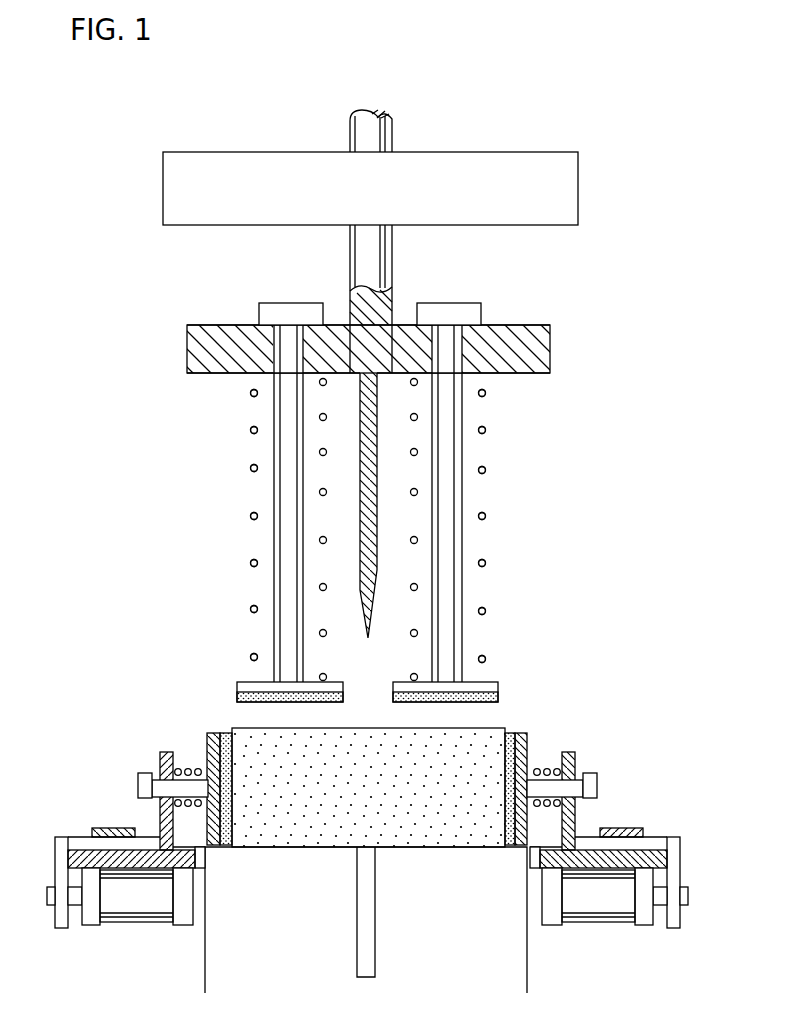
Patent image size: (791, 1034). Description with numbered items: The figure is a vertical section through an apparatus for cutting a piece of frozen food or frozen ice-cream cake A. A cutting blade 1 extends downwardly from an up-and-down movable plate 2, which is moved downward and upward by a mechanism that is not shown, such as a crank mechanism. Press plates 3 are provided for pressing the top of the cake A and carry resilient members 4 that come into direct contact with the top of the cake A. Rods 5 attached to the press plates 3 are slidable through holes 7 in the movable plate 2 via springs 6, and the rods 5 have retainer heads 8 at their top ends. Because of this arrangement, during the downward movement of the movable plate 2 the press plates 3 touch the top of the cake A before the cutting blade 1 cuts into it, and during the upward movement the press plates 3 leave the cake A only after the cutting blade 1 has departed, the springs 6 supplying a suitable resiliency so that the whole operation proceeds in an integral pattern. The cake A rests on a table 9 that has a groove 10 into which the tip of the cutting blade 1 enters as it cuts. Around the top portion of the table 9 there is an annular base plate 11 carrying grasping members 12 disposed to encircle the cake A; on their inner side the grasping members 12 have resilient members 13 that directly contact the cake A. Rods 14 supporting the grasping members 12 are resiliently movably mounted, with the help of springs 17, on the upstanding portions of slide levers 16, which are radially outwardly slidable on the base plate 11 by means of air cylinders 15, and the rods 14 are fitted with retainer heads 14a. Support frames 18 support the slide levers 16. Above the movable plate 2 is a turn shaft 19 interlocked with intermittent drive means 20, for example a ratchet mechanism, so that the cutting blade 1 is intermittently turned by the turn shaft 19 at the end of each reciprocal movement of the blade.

The cutting blade 1 is at (378, 570).
The movable plate 2 is at (552, 353).
The press plate 3 is at (240, 665).
The resilient member 4 is at (331, 699).
The rod 5 is at (275, 490).
The spring 6 is at (249, 563).
The hole 7 is at (281, 326).
The retainer head 8 is at (288, 303).
The table 9 is at (220, 968).
The groove 10 is at (373, 956).
The annular base plate 11 is at (73, 860).
The grasping member 12 is at (196, 735).
The resilient member 13 is at (223, 840).
The rod 14 is at (158, 782).
The retainer head 14a is at (139, 784).
The air cylinder 15 is at (133, 912).
The slide lever 16 is at (57, 917).
The spring 17 is at (190, 808).
The support frame 18 is at (92, 829).
The turn shaft 19 is at (392, 245).
The intermittent drive means 20 is at (579, 177).
The frozen ice-cream cake A is at (357, 738).